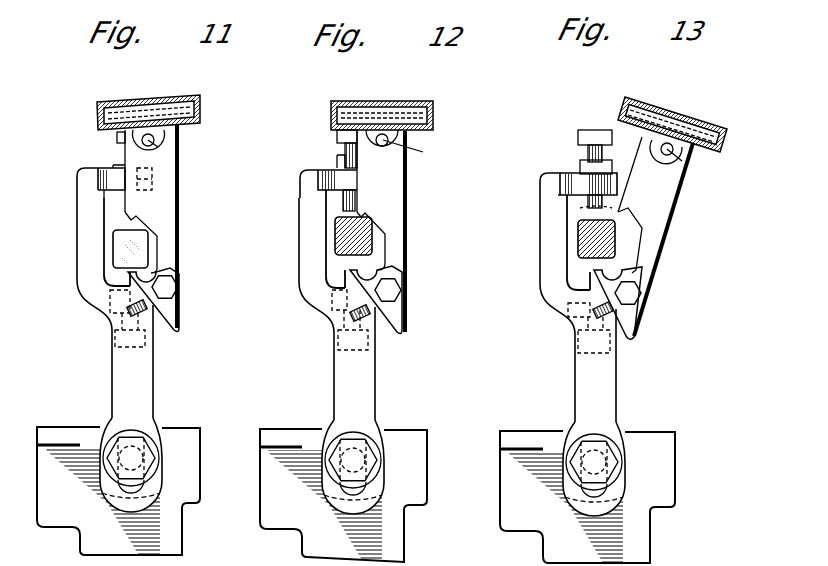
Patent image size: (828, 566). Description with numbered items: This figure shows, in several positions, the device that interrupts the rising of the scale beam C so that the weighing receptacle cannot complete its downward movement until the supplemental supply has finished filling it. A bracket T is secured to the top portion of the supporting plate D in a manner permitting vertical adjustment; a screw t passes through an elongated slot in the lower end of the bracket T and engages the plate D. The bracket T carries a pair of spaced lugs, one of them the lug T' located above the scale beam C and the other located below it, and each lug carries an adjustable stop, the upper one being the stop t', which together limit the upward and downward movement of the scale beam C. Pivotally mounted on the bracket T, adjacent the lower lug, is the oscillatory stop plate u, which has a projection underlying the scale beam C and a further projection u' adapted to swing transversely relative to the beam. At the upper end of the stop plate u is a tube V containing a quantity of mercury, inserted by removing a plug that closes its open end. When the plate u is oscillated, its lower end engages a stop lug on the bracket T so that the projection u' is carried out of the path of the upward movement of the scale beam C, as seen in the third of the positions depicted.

In FIG. 11, the screw t is at (133, 283).
In FIG. 12, the screw t is at (367, 294).
In FIG. 13, the screw t is at (624, 293).
In FIG. 11, the adjustable stop t' is at (175, 170).
In FIG. 12, the adjustable stop t' is at (310, 177).
In FIG. 13, the adjustable stop t' is at (584, 264).
In FIG. 11, the bracket T is at (168, 322).
In FIG. 11, the lug T' is at (79, 182).
In FIG. 12, the lug T' is at (314, 173).
In FIG. 13, the lug T' is at (573, 171).
In FIG. 11, the oscillatory stop plate u is at (167, 226).
In FIG. 12, the oscillatory stop plate u is at (386, 231).
In FIG. 13, the oscillatory stop plate u is at (665, 236).
In FIG. 11, the projection u' is at (173, 201).
In FIG. 12, the projection u' is at (344, 252).
In FIG. 13, the projection u' is at (650, 206).
In FIG. 11, the scale beam C is at (73, 243).
In FIG. 12, the scale beam C is at (376, 240).
In FIG. 13, the scale beam C is at (578, 235).
In FIG. 11, the supporting plate D is at (118, 492).
In FIG. 12, the supporting plate D is at (343, 495).
In FIG. 13, the supporting plate D is at (522, 433).
In FIG. 12, the tube V is at (438, 101).
In FIG. 13, the tube V is at (672, 140).